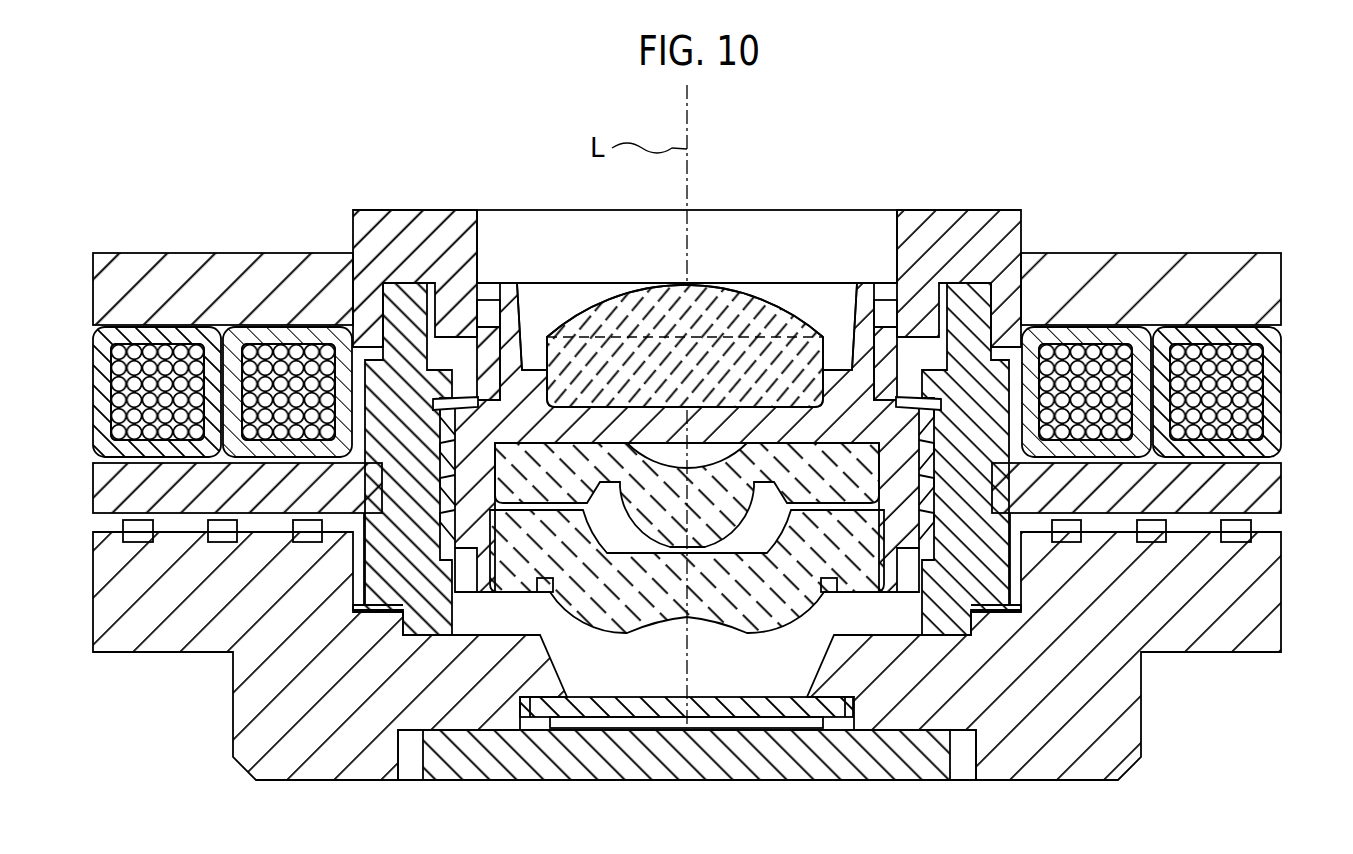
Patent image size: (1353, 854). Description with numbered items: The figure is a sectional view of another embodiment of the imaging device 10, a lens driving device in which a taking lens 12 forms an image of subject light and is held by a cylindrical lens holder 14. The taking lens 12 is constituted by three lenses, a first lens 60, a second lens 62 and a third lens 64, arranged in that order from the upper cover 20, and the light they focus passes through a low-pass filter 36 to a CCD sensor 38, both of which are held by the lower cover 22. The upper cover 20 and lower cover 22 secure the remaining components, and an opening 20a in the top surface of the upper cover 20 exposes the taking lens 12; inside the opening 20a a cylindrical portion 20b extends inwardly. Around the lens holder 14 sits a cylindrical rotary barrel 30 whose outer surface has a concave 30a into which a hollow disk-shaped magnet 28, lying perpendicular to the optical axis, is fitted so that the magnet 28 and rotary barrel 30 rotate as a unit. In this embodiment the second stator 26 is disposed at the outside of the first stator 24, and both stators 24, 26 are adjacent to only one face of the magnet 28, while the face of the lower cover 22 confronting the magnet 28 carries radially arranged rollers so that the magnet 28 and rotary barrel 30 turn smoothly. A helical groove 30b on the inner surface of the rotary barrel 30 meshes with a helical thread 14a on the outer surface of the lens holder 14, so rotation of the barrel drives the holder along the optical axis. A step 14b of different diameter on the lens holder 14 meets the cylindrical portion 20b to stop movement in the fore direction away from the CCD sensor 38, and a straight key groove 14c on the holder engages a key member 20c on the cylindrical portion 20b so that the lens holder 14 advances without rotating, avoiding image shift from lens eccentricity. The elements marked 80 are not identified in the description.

The imaging device 10 is at (848, 136).
The taking lens 12 is at (709, 264).
The lens holder 14 is at (578, 424).
The helical thread 14a is at (462, 600).
The step 14b is at (447, 405).
The straight key groove 14c is at (522, 370).
The upper cover 20 is at (96, 272).
The opening 20a is at (457, 300).
The cylindrical portion 20b is at (488, 318).
The key member 20c is at (493, 357).
The lower cover 22 is at (242, 740).
The first stator 24 is at (271, 322).
The second stator 26 is at (151, 322).
The magnet 28 is at (118, 497).
The rotary barrel 30 is at (400, 297).
The concave 30a is at (395, 608).
The helical groove 30b is at (383, 350).
The low-pass filter 36 is at (597, 705).
The CCD sensor 38 is at (765, 770).
The first lens 60 is at (632, 407).
The second lens 62 is at (747, 448).
The third lens 64 is at (770, 640).
The terminal pads 80 is at (138, 530).